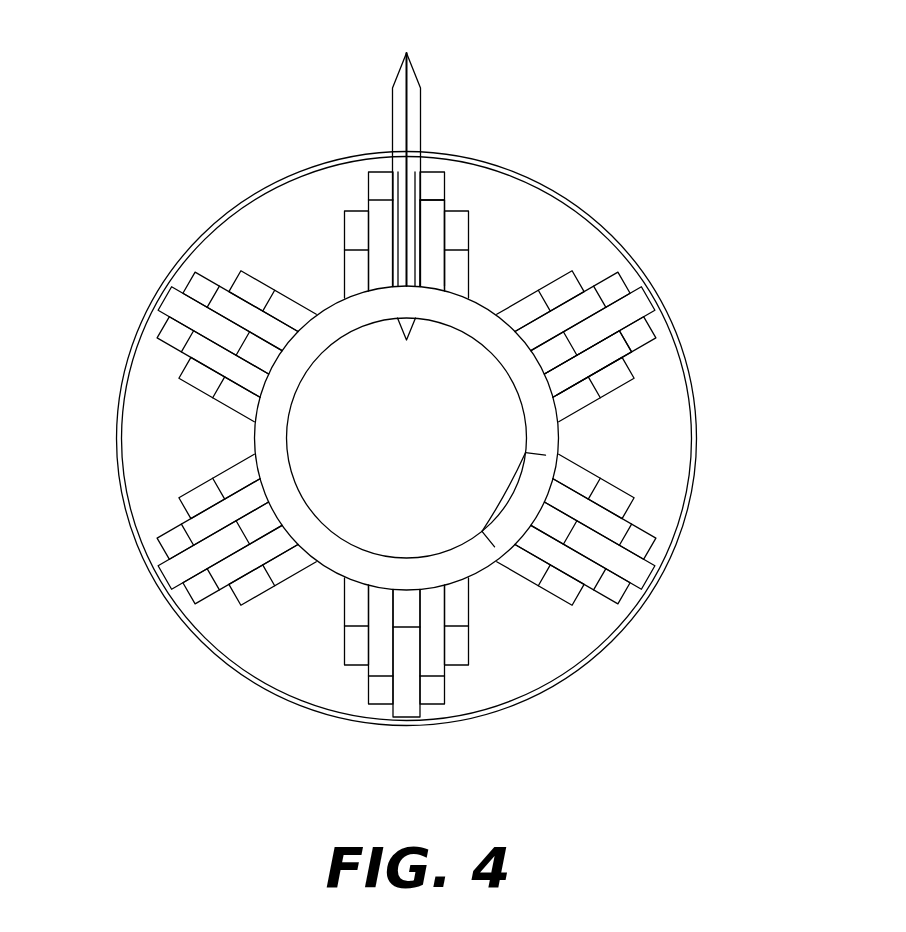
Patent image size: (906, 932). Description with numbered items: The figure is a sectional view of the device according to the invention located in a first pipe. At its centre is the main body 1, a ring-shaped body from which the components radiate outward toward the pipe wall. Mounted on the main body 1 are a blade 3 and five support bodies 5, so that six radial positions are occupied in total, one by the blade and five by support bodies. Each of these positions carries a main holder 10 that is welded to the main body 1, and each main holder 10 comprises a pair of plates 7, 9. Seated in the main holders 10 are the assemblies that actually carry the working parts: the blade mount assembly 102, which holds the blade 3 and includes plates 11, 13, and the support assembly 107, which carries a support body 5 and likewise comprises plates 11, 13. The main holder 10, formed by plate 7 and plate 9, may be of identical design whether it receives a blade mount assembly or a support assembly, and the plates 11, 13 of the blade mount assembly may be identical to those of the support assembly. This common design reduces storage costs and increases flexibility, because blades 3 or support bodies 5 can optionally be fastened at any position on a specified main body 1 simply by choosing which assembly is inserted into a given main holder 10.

The main body 1 is at (267, 432).
The blade 3 is at (413, 70).
The support body 5 is at (628, 305).
The plate 7 is at (460, 222).
The plate 9 is at (360, 215).
The main holder 10 is at (502, 495).
The plate 11 is at (433, 180).
The plate 13 is at (376, 176).
The blade mount assembly 102 is at (435, 210).
The support assembly 107 is at (617, 352).